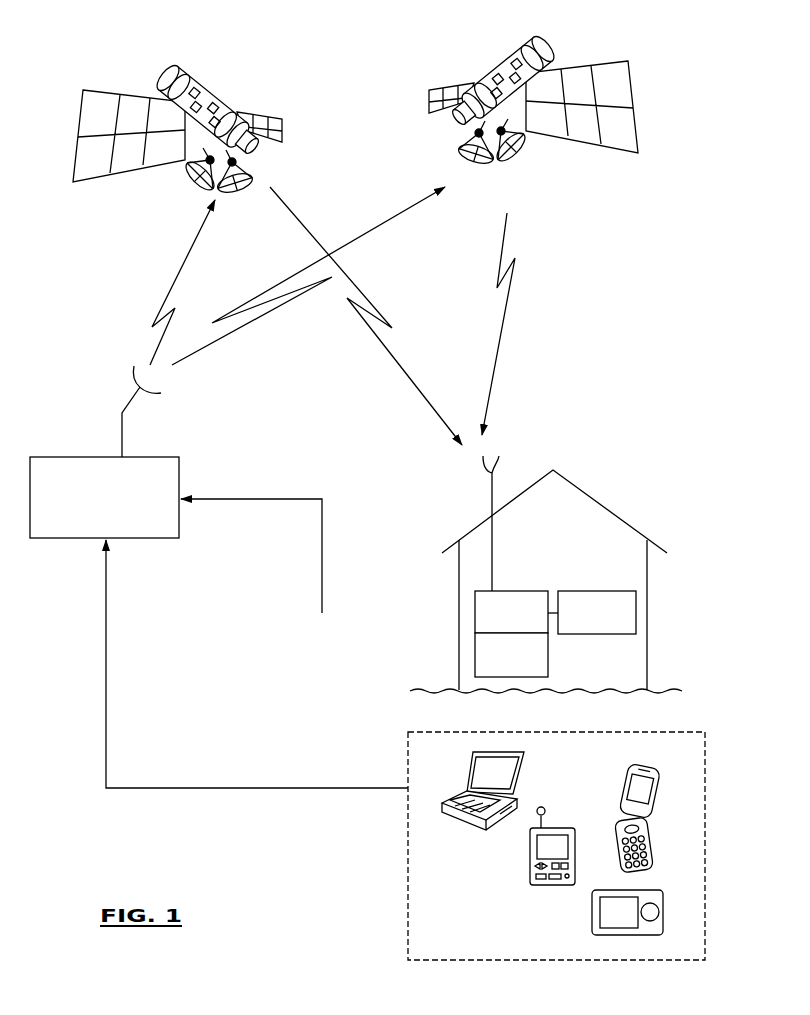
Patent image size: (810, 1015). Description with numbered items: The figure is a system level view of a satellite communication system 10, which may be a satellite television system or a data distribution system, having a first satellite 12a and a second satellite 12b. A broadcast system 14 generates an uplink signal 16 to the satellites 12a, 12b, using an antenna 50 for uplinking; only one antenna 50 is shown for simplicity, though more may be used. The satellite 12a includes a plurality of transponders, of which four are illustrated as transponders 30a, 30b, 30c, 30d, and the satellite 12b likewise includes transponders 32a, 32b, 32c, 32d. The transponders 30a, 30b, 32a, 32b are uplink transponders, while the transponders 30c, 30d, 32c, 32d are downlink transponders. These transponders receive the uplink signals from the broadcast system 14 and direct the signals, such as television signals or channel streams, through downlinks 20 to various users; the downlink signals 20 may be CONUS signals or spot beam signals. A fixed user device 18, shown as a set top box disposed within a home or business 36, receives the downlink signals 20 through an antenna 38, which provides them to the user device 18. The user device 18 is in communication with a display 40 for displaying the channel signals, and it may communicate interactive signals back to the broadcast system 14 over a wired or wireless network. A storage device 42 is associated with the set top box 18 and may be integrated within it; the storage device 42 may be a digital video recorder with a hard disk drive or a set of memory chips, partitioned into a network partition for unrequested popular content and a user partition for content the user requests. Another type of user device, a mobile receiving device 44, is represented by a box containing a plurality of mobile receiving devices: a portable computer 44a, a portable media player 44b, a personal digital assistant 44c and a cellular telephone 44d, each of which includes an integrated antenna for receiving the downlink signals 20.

The satellite communication system 10 is at (368, 62).
The first satellite 12a is at (97, 182).
The second satellite 12b is at (613, 157).
The broadcast system 14 is at (43, 540).
The uplink signal 16 is at (162, 306).
The user device 18 is at (517, 590).
The downlinks 20 is at (390, 362).
The transponder 30a is at (177, 110).
The transponder 30b is at (193, 108).
The transponder 30c is at (197, 138).
The transponder 30d is at (200, 127).
The transponder 32a is at (520, 75).
The transponder 32b is at (540, 90).
The transponder 32c is at (492, 80).
The transponder 32d is at (515, 108).
The home or business 36 is at (595, 497).
The antenna 38 is at (485, 468).
The display 40 is at (595, 590).
The storage device 42 is at (475, 651).
The mobile receiving device 44 is at (408, 762).
The portable computer 44a is at (450, 826).
The portable media player 44b is at (664, 899).
The personal digital assistant 44c is at (530, 870).
The cellular telephone 44d is at (660, 830).
The antenna 50 is at (140, 370).